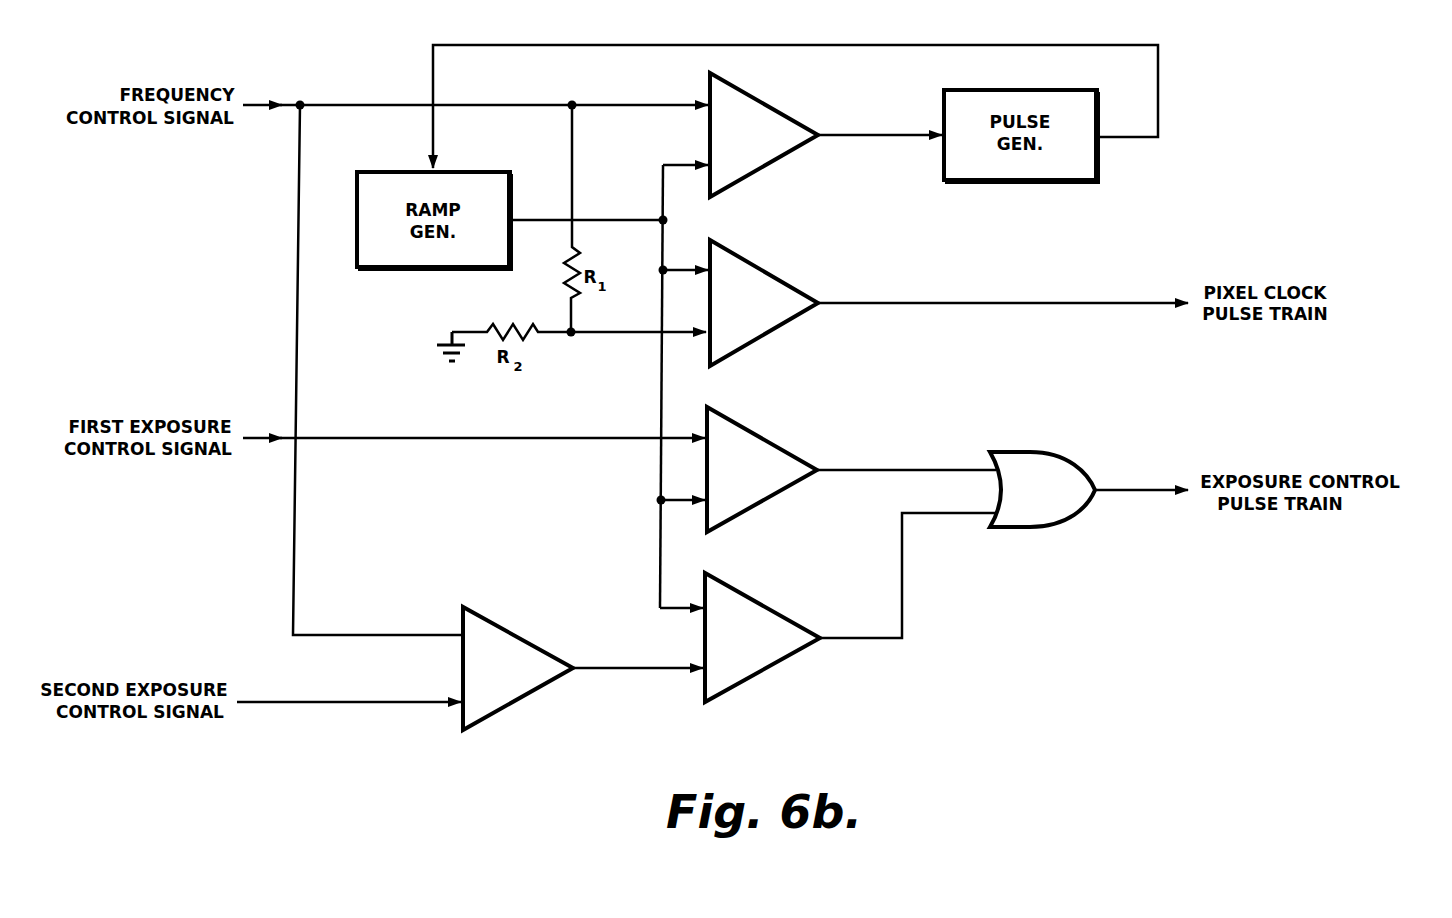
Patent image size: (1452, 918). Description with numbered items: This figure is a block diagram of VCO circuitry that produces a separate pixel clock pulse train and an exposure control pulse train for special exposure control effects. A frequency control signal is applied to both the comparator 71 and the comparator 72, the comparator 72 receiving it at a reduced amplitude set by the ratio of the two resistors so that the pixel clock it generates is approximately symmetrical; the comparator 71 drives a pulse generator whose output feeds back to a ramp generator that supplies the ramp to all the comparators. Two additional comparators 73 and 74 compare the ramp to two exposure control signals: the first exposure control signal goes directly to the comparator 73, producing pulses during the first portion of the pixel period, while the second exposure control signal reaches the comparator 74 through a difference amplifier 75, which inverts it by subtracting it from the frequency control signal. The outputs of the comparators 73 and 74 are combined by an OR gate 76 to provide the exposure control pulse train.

The comparator 71 is at (752, 111).
The comparator 72 is at (750, 276).
The comparator 73 is at (747, 441).
The comparator 74 is at (750, 607).
The difference amplifier 75 is at (508, 642).
The OR gate 76 is at (1027, 463).